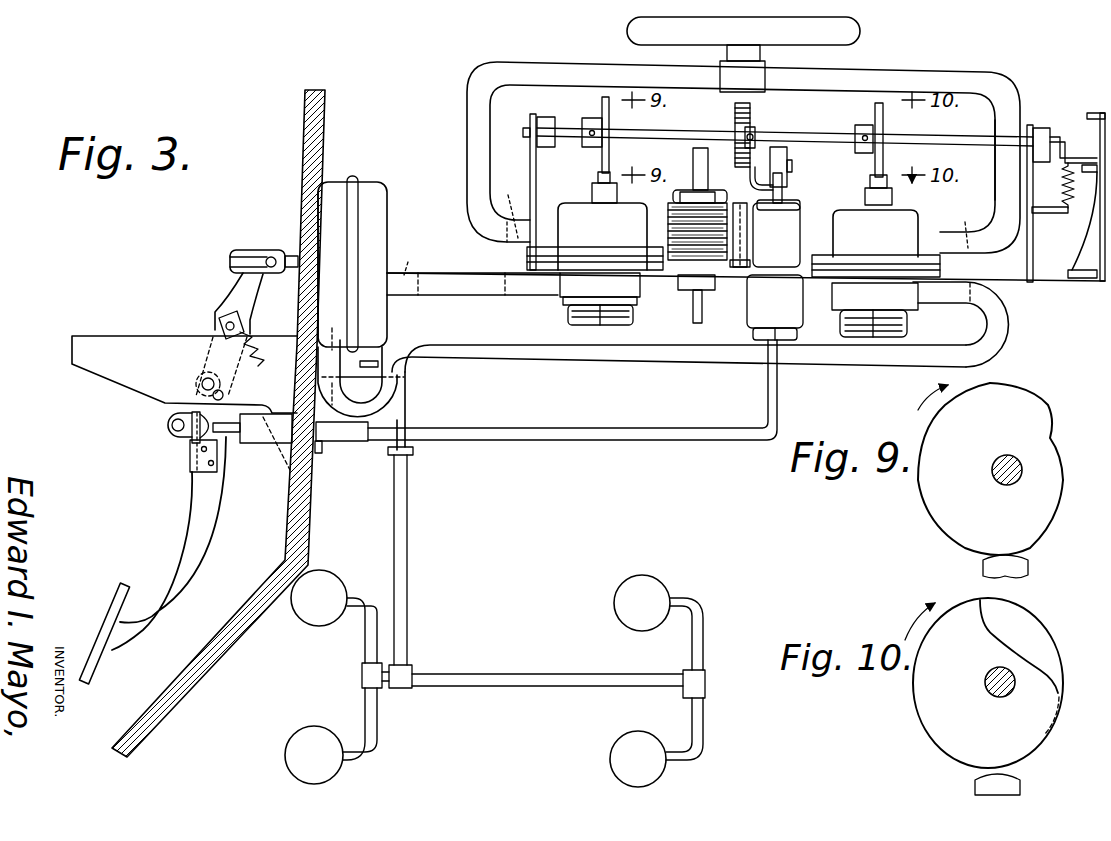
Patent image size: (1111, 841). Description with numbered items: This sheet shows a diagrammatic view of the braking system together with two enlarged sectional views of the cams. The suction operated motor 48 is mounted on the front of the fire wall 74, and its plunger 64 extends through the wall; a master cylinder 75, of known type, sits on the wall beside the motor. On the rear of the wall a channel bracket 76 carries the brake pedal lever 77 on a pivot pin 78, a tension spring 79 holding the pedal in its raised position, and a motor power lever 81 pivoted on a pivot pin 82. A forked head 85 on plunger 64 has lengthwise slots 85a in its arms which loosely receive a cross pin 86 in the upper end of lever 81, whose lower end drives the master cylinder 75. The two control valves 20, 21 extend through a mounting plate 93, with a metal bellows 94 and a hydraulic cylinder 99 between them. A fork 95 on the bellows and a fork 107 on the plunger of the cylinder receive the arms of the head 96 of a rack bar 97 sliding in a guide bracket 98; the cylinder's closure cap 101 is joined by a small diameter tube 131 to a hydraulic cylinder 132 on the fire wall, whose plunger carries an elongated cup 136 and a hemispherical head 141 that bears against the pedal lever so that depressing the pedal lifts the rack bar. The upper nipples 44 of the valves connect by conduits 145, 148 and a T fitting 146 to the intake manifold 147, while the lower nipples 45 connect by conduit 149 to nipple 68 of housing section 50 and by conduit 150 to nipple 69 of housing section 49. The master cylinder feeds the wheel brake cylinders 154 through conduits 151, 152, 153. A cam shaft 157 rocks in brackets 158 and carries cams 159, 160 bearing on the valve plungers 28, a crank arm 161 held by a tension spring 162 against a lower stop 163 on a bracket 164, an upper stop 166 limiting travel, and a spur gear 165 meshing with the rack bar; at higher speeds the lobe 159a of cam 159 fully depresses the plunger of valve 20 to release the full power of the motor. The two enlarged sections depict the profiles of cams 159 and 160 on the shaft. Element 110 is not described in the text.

In FIG. 3, the control valve 20 is at (575, 204).
In FIG. 3, the control valve 21 is at (840, 212).
In FIG. 3, the plunger 28 is at (600, 175).
In FIG. 9, the plunger 28 is at (1028, 566).
In FIG. 10, the plunger 28 is at (1020, 782).
In FIG. 3, the upper nipple 44 is at (733, 210).
In FIG. 3, the lower nipple 45 is at (540, 288).
In FIG. 3, the suction operated motor 48 is at (385, 182).
In FIG. 3, the housing section 49 is at (373, 235).
In FIG. 3, the housing section 50 is at (337, 198).
In FIG. 3, the plunger 64 is at (290, 256).
In FIG. 3, the nipple 68 is at (334, 357).
In FIG. 3, the nipple 69 is at (412, 257).
In FIG. 3, the fire wall 74 is at (305, 128).
In FIG. 3, the master cylinder 75 is at (400, 412).
In FIG. 3, the channel bracket 76 is at (72, 343).
In FIG. 3, the brake pedal lever 77 is at (177, 540).
In FIG. 3, the pivot pin 78 is at (203, 380).
In FIG. 3, the tension spring 79 is at (245, 325).
In FIG. 3, the motor power lever 81 is at (232, 292).
In FIG. 3, the pivot pin 82 is at (222, 394).
In FIG. 3, the forked head 85 is at (283, 275).
In FIG. 3, the lengthwise slots 85a is at (232, 262).
In FIG. 3, the cross pin 86 is at (266, 258).
In FIG. 3, the mounting plate 93 is at (1043, 283).
In FIG. 3, the metal bellows 94 is at (668, 210).
In FIG. 3, the fork 95 is at (695, 176).
In FIG. 3, the head 96 is at (760, 187).
In FIG. 3, the rack bar 97 is at (735, 110).
In FIG. 3, the guide bracket 98 is at (748, 215).
In FIG. 3, the hydraulic cylinder 99 is at (806, 243).
In FIG. 3, the closure cap 101 is at (750, 310).
In FIG. 3, the fork 107 is at (787, 150).
In FIG. 3, the rod 110 is at (693, 308).
In FIG. 3, the small diameter tube 131 is at (585, 430).
In FIG. 3, the hydraulic cylinder 132 is at (350, 442).
In FIG. 3, the elongated cup 136 is at (262, 445).
In FIG. 3, the hemispherical head 141 is at (195, 438).
In FIG. 3, the conduit 145 is at (995, 157).
In FIG. 3, the T fitting 146 is at (765, 72).
In FIG. 3, the intake manifold 147 is at (627, 30).
In FIG. 3, the conduit 148 is at (467, 103).
In FIG. 3, the conduit 149 is at (693, 353).
In FIG. 3, the conduit 150 is at (470, 287).
In FIG. 3, the conduit 151 is at (410, 492).
In FIG. 3, the conduit 152 is at (530, 675).
In FIG. 3, the conduit 153 is at (366, 690).
In FIG. 3, the wheel brake cylinders 154 is at (318, 615).
In FIG. 3, the cam shaft 157 is at (812, 131).
In FIG. 9, the cam shaft 157 is at (1007, 486).
In FIG. 10, the cam shaft 157 is at (1000, 698).
In FIG. 3, the brackets 158 is at (532, 157).
In FIG. 3, the cam 159 is at (602, 100).
In FIG. 9, the cam 159 is at (935, 508).
In FIG. 10, the cam 159 is at (1012, 622).
In FIG. 9, the lobe 159a is at (1050, 402).
In FIG. 10, the lobe 159a is at (1050, 630).
In FIG. 3, the cam 160 is at (880, 103).
In FIG. 10, the cam 160 is at (915, 705).
In FIG. 3, the crank arm 161 is at (1080, 150).
In FIG. 3, the tension spring 162 is at (1063, 190).
In FIG. 3, the lower stop 163 is at (1088, 222).
In FIG. 3, the bracket 164 is at (1088, 252).
In FIG. 3, the spur gear 165 is at (750, 127).
In FIG. 3, the upper stop 166 is at (1095, 112).